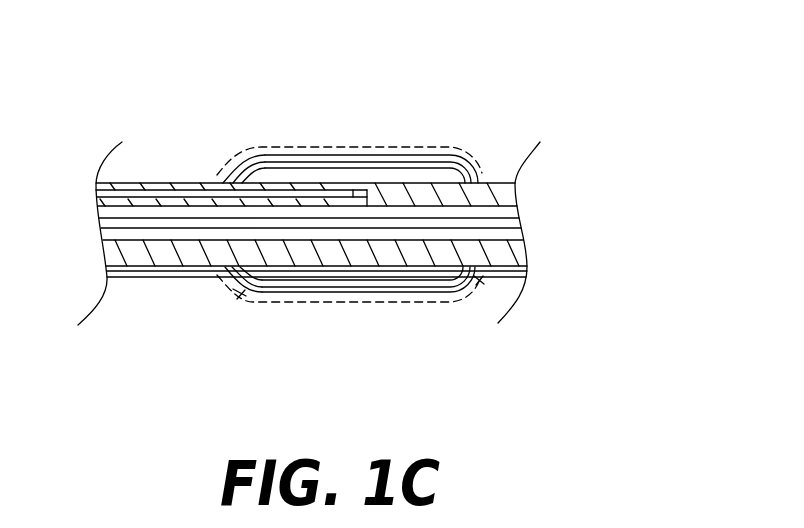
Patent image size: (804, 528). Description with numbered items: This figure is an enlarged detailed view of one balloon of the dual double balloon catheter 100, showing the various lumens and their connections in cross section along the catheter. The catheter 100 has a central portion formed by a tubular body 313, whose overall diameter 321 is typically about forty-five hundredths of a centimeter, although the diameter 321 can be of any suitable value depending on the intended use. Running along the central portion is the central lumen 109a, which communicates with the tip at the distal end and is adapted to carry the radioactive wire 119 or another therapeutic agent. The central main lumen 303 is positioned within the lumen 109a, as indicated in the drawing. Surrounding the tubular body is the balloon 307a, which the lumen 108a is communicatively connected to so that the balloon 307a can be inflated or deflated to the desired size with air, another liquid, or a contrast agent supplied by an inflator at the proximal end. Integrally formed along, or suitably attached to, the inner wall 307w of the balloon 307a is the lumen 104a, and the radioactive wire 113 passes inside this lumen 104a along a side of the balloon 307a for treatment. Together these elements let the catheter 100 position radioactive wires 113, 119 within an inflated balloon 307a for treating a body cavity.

The dual double balloon catheter 100 is at (145, 147).
The lumen 104a is at (388, 155).
The lumen 108a is at (198, 183).
The central lumen 109a is at (491, 215).
The radioactive wire 113 is at (300, 160).
The radioactive wire 119 is at (147, 223).
The central main lumen 303 is at (360, 242).
The balloon 307a is at (453, 147).
The inner wall 307w is at (478, 280).
The tubular body 313 is at (132, 278).
The diameter 321 is at (183, 330).